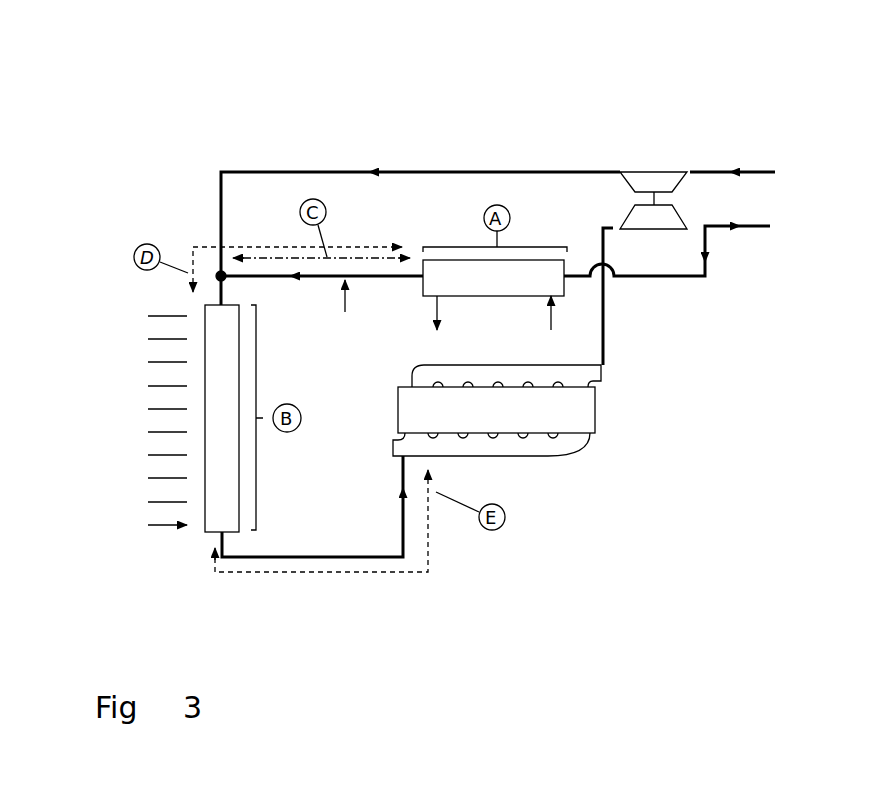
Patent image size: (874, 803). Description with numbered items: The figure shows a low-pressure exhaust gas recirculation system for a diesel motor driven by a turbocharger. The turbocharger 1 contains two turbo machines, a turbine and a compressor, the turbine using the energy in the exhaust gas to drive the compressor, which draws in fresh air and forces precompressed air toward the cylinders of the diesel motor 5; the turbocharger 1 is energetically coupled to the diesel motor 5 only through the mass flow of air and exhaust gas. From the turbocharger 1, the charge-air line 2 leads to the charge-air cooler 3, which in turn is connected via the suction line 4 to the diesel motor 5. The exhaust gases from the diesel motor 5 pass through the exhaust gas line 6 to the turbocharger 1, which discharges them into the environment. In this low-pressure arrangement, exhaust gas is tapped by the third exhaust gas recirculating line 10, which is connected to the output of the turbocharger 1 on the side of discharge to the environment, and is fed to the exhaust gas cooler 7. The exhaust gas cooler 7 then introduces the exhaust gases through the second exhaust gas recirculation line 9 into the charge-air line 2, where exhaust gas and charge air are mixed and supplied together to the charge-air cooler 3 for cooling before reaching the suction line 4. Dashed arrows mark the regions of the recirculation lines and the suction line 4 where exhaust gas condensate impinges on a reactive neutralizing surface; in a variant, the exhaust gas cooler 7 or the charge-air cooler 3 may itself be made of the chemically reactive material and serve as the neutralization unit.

The turbocharger 1 is at (655, 168).
The charge-air line 2 is at (432, 170).
The charge-air cooler 3 is at (216, 377).
The suction line 4 is at (333, 562).
The diesel motor 5 is at (572, 412).
The exhaust gas line 6 is at (606, 340).
The exhaust gas cooler 7 is at (515, 278).
The second exhaust gas recirculation line 9 is at (355, 357).
The third exhaust gas recirculating line 10 is at (708, 267).